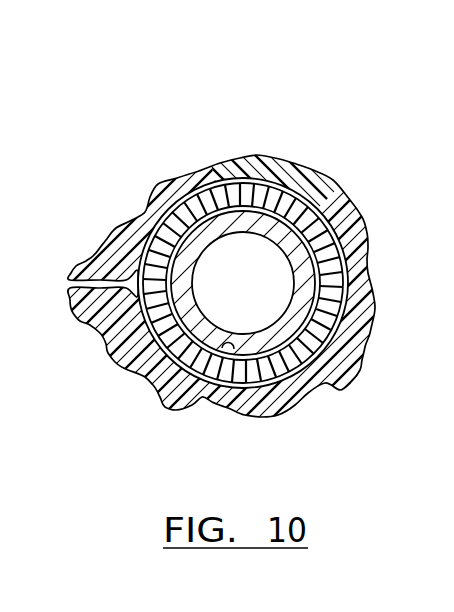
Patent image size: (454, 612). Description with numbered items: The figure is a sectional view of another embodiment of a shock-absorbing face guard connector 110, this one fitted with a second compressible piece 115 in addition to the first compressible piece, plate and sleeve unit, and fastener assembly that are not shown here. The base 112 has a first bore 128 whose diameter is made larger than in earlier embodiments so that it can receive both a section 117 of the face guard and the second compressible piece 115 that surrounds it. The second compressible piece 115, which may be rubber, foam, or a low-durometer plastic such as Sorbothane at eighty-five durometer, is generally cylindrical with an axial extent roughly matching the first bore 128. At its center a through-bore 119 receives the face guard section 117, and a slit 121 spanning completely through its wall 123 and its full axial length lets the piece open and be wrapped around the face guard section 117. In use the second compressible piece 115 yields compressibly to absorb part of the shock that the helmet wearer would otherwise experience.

The shock-absorbing face guard connector 110 is at (337, 78).
The base 112 is at (348, 210).
The second compressible piece 115 is at (317, 340).
The section of a face guard 117 is at (182, 268).
The through-bore 119 is at (228, 349).
The slit 121 is at (241, 208).
The wall 123 is at (188, 214).
The first bore 128 is at (172, 392).